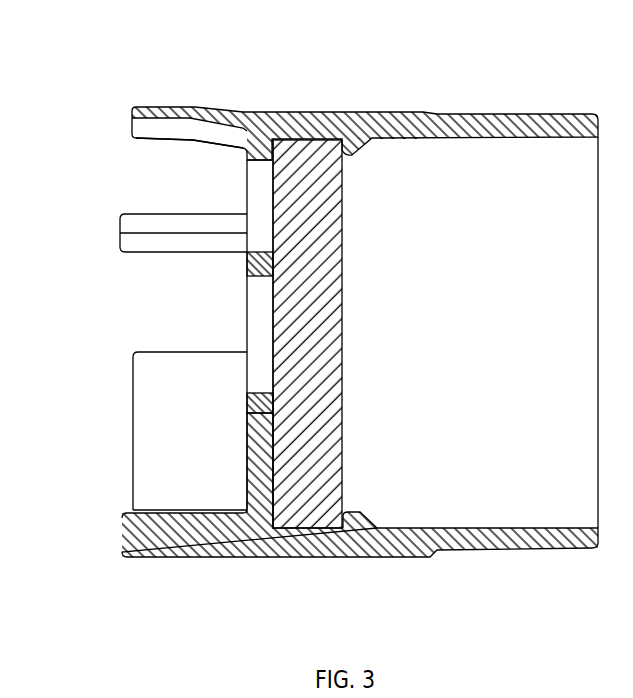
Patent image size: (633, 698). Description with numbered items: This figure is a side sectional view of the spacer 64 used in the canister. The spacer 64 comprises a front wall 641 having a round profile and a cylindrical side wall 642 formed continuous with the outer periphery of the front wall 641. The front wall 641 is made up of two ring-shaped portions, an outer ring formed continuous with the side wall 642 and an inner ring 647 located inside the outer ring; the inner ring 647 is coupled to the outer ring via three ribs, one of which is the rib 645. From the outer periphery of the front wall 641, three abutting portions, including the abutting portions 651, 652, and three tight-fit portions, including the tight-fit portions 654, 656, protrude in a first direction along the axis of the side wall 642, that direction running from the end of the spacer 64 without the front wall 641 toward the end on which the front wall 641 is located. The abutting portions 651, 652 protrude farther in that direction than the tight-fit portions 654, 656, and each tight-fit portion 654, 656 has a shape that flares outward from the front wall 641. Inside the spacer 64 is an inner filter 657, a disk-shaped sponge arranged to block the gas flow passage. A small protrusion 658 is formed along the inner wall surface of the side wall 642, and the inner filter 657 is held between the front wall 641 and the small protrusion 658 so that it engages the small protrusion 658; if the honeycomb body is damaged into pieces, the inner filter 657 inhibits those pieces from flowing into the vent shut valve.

The spacer 64 is at (88, 99).
The front wall 641 is at (247, 152).
The side wall 642 is at (408, 125).
The rib 645 is at (247, 467).
The inner ring 647 is at (247, 402).
The abutting portion 651 is at (120, 232).
The abutting portion 652 is at (190, 542).
The tight-fit portion 654 is at (158, 403).
The tight-fit portion 656 is at (178, 128).
The inner filter 657 is at (297, 513).
The small protrusion 658 is at (357, 140).